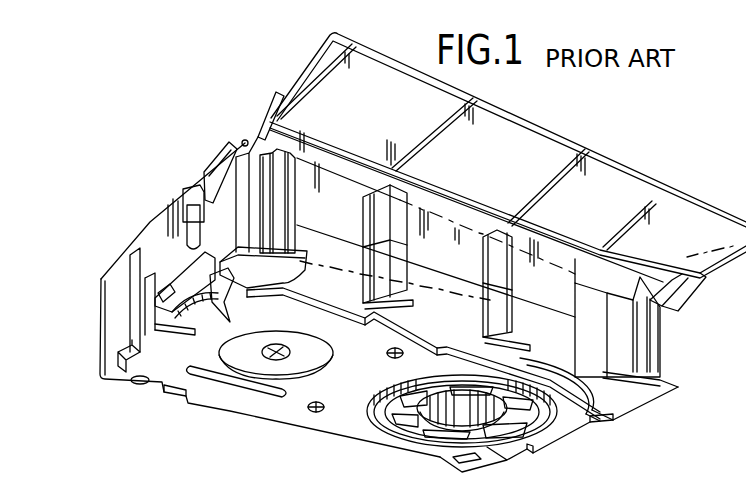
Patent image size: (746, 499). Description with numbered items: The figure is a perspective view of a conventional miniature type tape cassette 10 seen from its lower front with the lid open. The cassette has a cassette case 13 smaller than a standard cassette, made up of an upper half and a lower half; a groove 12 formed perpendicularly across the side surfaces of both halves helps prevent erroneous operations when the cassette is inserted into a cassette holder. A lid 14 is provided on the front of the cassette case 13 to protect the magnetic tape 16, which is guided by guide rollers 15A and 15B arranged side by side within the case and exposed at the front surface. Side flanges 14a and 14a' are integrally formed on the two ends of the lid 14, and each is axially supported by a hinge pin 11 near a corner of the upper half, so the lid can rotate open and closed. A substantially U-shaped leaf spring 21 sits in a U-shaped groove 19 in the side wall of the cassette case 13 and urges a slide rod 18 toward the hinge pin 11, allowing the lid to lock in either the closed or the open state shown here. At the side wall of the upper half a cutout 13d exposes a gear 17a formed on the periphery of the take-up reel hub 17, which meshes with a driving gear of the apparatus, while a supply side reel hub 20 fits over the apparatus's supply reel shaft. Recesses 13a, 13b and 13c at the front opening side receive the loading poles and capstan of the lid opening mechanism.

The miniature type tape cassette 10 is at (594, 128).
The hinge pin 11 is at (243, 138).
The groove 12 is at (130, 360).
The cassette case 13 is at (146, 225).
The recess 13a is at (345, 292).
The recess 13b is at (437, 333).
The recess 13c is at (585, 367).
The cutout 13d is at (193, 271).
The lid 14 is at (634, 184).
The side flange 14a is at (260, 164).
The side flange 14a' is at (692, 292).
The guide roller 15A is at (295, 212).
The guide roller 15B is at (658, 336).
The magnetic tape 16 is at (453, 237).
The take-up reel hub 17 is at (190, 320).
The gear 17a is at (214, 302).
The slide rod 18 is at (225, 160).
The U-shaped groove 19 is at (200, 183).
The supply side reel hub 20 is at (457, 415).
The leaf spring 21 is at (184, 196).